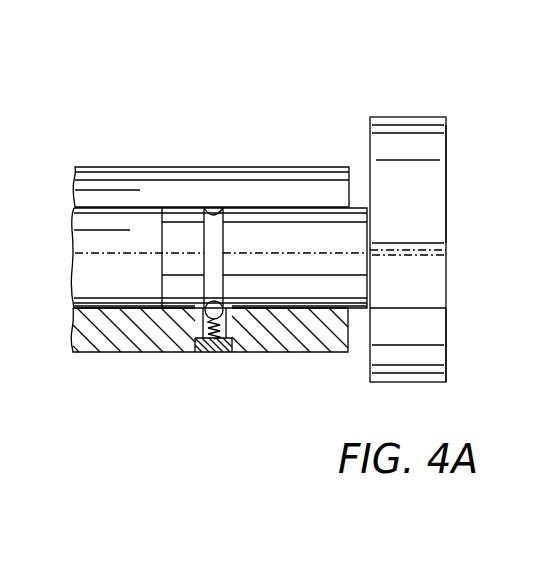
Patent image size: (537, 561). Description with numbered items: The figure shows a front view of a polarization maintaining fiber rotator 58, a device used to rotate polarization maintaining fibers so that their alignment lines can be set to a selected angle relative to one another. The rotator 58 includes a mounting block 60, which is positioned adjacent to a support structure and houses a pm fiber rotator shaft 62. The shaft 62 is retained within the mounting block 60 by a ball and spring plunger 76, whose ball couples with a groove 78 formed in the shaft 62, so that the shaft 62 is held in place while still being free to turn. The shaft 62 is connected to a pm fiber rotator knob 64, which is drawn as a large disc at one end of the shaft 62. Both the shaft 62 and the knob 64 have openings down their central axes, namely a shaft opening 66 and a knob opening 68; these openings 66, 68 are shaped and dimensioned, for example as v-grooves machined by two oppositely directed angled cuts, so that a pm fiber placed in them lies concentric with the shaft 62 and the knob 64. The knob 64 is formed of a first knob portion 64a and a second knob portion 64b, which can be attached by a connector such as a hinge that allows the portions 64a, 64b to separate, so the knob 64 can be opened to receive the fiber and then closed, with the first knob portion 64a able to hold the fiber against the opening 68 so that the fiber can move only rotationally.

The pm fiber rotator 58 is at (469, 86).
The mounting block 60 is at (110, 354).
The pm fiber rotator shaft 62 is at (308, 309).
The pm fiber rotator knob 64 is at (458, 151).
The first knob portion 64a is at (447, 202).
The second knob portion 64b is at (446, 337).
The shaft opening 66 is at (285, 250).
The knob opening 68 is at (425, 256).
The ball and spring plunger 76 is at (215, 353).
The groove 78 is at (218, 206).